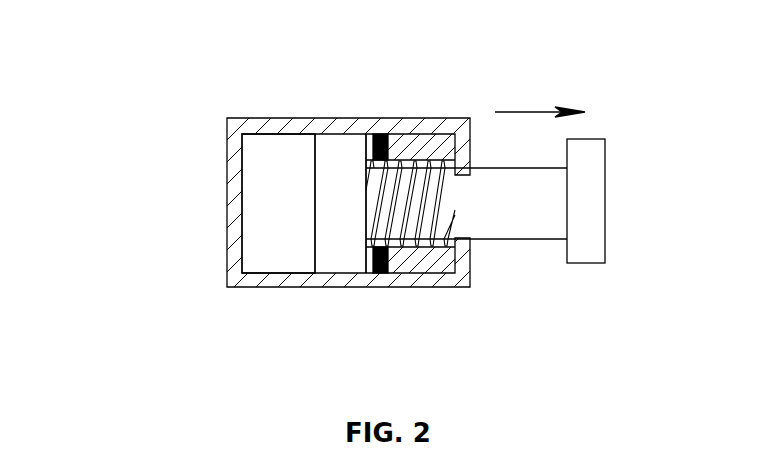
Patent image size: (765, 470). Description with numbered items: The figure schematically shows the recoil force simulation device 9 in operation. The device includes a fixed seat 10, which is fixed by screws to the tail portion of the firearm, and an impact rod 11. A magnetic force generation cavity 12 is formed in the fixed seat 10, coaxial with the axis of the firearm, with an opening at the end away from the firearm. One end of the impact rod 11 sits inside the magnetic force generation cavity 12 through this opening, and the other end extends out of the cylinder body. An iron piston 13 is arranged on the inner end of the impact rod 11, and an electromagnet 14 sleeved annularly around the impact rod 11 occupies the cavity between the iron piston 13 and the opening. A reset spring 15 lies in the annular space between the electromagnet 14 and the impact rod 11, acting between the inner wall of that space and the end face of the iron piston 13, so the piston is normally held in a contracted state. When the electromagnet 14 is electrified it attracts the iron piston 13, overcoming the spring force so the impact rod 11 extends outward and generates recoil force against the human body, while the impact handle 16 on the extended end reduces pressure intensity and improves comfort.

The recoil force simulation device 9 is at (172, 176).
The fixed seat 10 is at (242, 121).
The impact rod 11 is at (493, 218).
The magnetic force generation cavity 12 is at (263, 253).
The iron piston 13 is at (333, 260).
The electromagnet 14 is at (378, 140).
The reset spring 15 is at (407, 195).
The impact handle 16 is at (587, 162).